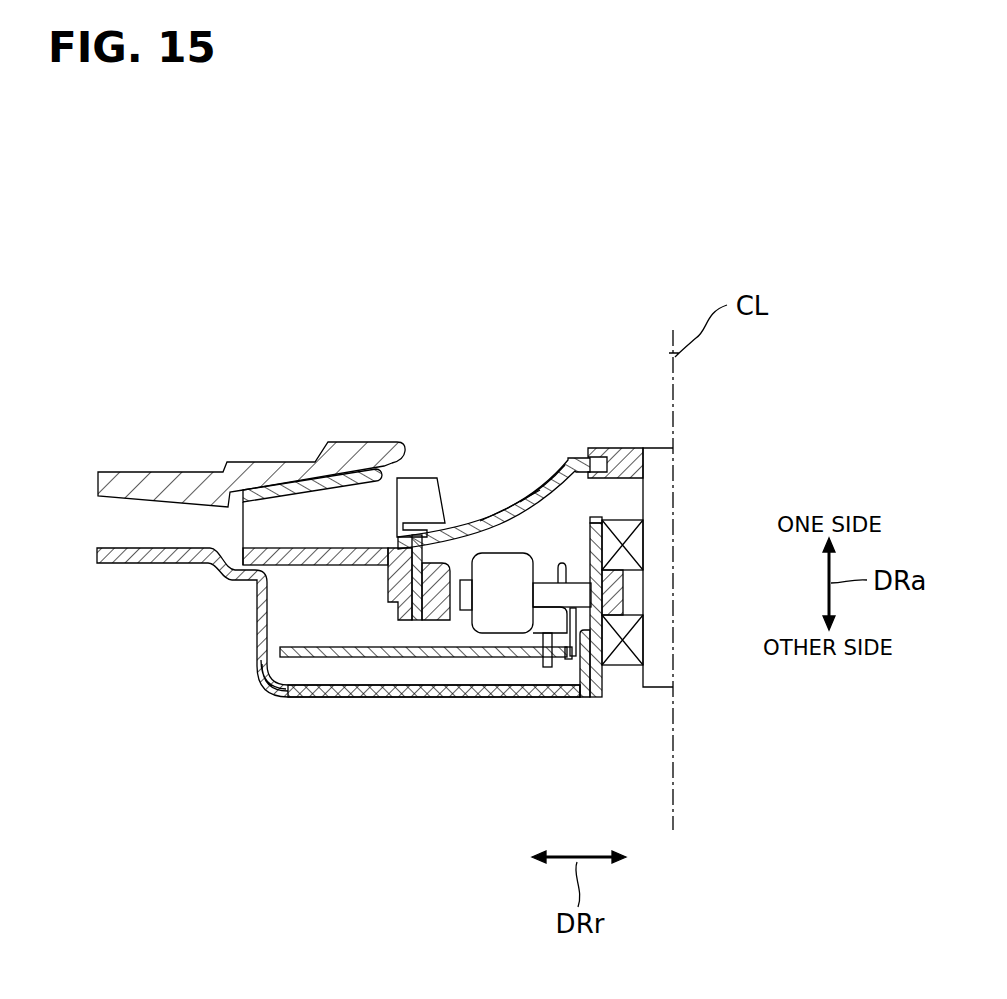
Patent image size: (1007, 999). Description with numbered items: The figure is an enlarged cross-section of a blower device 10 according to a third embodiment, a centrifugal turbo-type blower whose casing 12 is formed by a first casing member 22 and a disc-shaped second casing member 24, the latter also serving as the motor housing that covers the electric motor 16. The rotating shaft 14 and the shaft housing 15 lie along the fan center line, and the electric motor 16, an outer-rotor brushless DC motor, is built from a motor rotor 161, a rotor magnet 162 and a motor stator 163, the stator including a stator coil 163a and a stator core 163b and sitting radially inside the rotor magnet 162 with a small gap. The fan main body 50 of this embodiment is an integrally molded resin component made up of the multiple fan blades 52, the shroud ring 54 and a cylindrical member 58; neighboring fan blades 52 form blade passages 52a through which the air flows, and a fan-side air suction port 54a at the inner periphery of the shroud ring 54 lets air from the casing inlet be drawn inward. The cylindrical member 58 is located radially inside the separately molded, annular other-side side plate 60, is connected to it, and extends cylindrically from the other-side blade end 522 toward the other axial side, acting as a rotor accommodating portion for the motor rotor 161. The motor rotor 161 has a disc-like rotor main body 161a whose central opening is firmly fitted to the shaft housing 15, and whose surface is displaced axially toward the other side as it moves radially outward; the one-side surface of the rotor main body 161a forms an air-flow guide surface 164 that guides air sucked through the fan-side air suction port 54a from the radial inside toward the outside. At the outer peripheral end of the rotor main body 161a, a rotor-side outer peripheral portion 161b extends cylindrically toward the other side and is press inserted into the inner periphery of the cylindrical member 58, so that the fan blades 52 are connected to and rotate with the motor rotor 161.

The blower device 10 is at (175, 310).
The casing 12 is at (132, 401).
The first casing member 22 is at (253, 461).
The shroud ring 54 is at (275, 500).
The blade passage 52a is at (318, 522).
The fan blade 52 is at (259, 603).
The other-side blade end 522 is at (258, 665).
The second casing member 24 is at (363, 698).
The fan main body 50 is at (327, 658).
The other-side side plate 60 is at (300, 532).
The cylindrical member 58 is at (408, 622).
The rotor-side outer peripheral portion 161b is at (418, 622).
The rotor magnet 162 is at (436, 621).
The motor rotor 161 is at (470, 508).
The fan-side air suction port 54a is at (493, 512).
The rotor main body 161a is at (530, 510).
The air-flow guide surface 164 is at (517, 474).
The motor stator 163 is at (483, 790).
The stator coil 163a is at (560, 600).
The stator core 163b is at (578, 650).
The electric motor 16 is at (569, 545).
The shaft housing 15 is at (628, 447).
The rotating shaft 14 is at (660, 688).